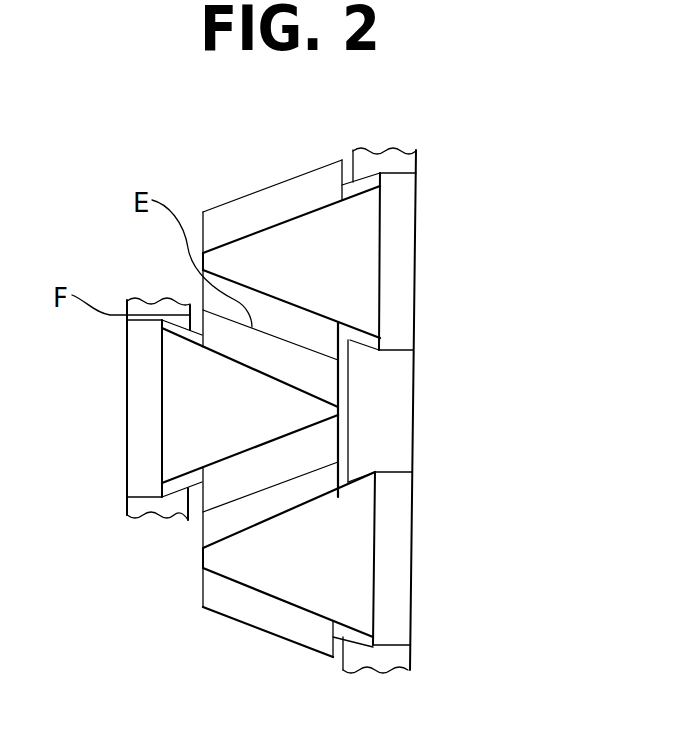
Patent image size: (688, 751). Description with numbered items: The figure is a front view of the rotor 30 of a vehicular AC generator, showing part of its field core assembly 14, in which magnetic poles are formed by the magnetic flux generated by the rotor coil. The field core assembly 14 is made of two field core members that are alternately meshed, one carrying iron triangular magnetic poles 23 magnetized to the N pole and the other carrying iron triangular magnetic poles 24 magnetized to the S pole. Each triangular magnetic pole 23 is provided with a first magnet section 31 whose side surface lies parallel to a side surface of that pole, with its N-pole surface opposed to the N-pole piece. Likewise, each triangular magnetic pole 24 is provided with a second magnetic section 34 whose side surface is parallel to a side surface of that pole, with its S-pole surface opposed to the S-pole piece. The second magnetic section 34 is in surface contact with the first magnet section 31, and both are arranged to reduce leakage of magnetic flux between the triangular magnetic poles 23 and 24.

The field core assembly 14 is at (116, 426).
The triangular magnetic pole 23 is at (323, 235).
The triangular magnetic pole 24 is at (207, 435).
The rotor 30 is at (425, 397).
The first magnet section 31 is at (359, 172).
The second magnetic section 34 is at (228, 333).